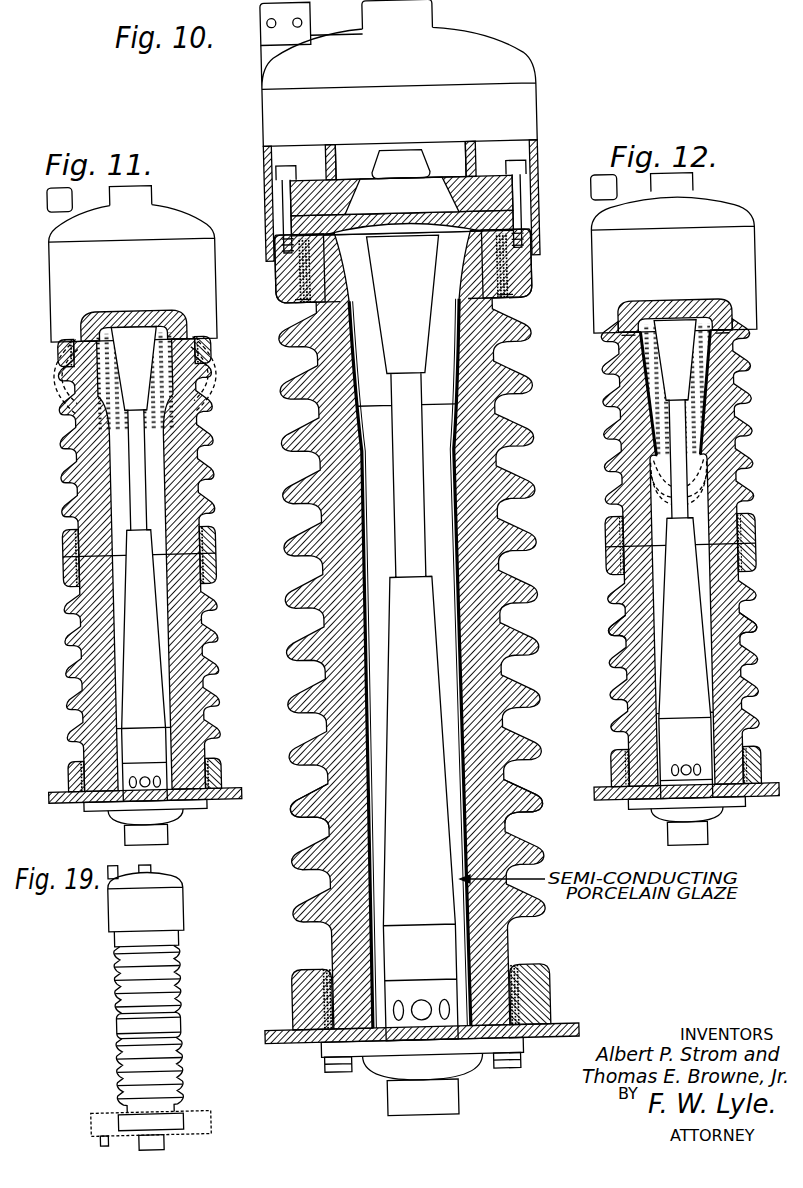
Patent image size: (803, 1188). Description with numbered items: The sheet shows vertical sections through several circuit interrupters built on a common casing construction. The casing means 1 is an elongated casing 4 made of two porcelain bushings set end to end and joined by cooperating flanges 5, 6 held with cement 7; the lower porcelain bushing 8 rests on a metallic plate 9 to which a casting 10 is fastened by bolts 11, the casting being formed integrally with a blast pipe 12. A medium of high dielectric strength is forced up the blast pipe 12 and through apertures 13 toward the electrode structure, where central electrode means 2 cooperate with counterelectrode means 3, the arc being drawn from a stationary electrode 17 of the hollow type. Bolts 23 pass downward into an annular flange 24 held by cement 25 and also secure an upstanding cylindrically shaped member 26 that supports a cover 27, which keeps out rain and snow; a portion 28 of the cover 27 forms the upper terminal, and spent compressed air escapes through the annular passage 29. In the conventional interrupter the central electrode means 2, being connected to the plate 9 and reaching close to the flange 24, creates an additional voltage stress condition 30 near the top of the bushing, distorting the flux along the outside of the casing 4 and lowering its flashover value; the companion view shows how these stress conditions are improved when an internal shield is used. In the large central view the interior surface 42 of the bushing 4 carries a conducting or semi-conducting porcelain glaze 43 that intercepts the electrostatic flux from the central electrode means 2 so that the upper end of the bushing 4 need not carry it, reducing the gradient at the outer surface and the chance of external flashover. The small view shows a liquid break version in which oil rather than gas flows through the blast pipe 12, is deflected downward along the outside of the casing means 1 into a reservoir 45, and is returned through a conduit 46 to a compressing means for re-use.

In FIG. 19, the casing means 1 is at (205, 1009).
In FIG. 10, the central electrode means 2 is at (418, 309).
In FIG. 11, the central electrode means 2 is at (139, 404).
In FIG. 10, the counterelectrode means 3 is at (455, 181).
In FIG. 10, the elongated casing 4 is at (514, 478).
In FIG. 12, the elongated casing 4 is at (754, 442).
In FIG. 12, the cooperating flange 5 is at (757, 528).
In FIG. 12, the cooperating flange 6 is at (757, 559).
In FIG. 12, the cement 7 is at (751, 585).
In FIG. 10, the lower porcelain bushing 8 is at (536, 806).
In FIG. 12, the lower porcelain bushing 8 is at (756, 630).
In FIG. 10, the metallic plate 9 is at (566, 1027).
In FIG. 11, the metallic plate 9 is at (229, 791).
In FIG. 12, the metallic plate 9 is at (773, 784).
In FIG. 10, the casting 10 is at (470, 1073).
In FIG. 11, the casting 10 is at (178, 817).
In FIG. 12, the casting 10 is at (722, 813).
In FIG. 10, the bolts 11 is at (510, 1068).
In FIG. 10, the blast pipe 12 is at (456, 1110).
In FIG. 11, the blast pipe 12 is at (162, 841).
In FIG. 12, the blast pipe 12 is at (712, 841).
In FIG. 19, the blast pipe 12 is at (162, 1147).
In FIG. 10, the apertures 13 is at (436, 998).
In FIG. 11, the apertures 13 is at (151, 777).
In FIG. 12, the apertures 13 is at (683, 766).
In FIG. 10, the stationary electrode 17 is at (380, 162).
In FIG. 10, the bolts 23 is at (516, 165).
In FIG. 10, the annular flange 24 is at (538, 283).
In FIG. 11, the annular flange 24 is at (210, 352).
In FIG. 12, the annular flange 24 is at (752, 342).
In FIG. 19, the annular flange 24 is at (182, 940).
In FIG. 10, the cement 25 is at (516, 300).
In FIG. 12, the cement 25 is at (744, 360).
In FIG. 10, the cylindrically shaped member 26 is at (336, 153).
In FIG. 10, the cover 27 is at (535, 70).
In FIG. 11, the cover 27 is at (190, 225).
In FIG. 12, the cover 27 is at (732, 215).
In FIG. 19, the cover 27 is at (184, 879).
In FIG. 10, the portion of the cover 28 is at (311, 14).
In FIG. 11, the portion of the cover 28 is at (48, 200).
In FIG. 12, the portion of the cover 28 is at (592, 190).
In FIG. 19, the portion of the cover 28 is at (114, 865).
In FIG. 10, the annular passage 29 is at (541, 262).
In FIG. 11, the voltage stress condition 30 is at (222, 387).
In FIG. 10, the interior surface of the bushing 42 is at (366, 497).
In FIG. 10, the semi-conducting porcelain glaze 43 is at (365, 523).
In FIG. 19, the reservoir 45 is at (210, 1119).
In FIG. 19, the conduit 46 is at (98, 1141).